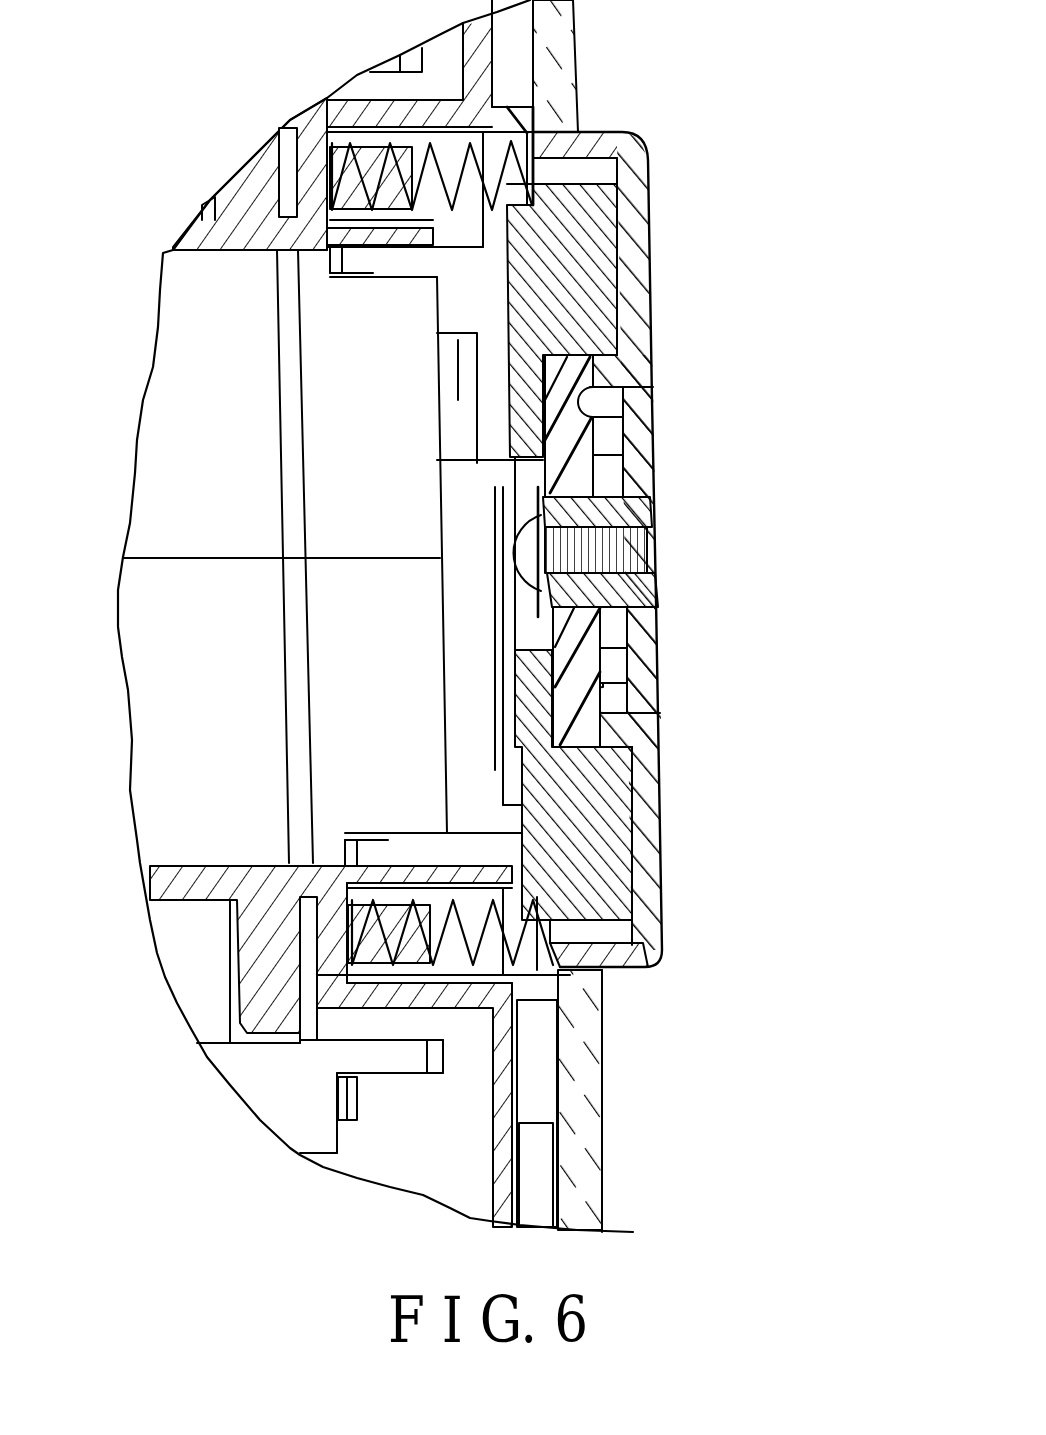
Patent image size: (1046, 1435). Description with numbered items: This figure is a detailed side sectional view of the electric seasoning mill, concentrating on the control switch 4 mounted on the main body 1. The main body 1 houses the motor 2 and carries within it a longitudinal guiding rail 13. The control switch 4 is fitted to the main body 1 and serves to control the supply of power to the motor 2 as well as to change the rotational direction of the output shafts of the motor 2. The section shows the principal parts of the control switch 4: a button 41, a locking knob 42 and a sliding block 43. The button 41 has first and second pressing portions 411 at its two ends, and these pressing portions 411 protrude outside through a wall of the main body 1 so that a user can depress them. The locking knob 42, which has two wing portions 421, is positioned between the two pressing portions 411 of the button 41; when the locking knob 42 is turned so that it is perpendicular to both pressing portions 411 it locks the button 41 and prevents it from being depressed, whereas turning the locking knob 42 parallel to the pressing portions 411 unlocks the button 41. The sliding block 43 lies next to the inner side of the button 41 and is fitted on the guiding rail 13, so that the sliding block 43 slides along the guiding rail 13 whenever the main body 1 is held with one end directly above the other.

The main body 1 is at (600, 1117).
The motor 2 is at (147, 627).
The control switch 4 is at (679, 537).
The guiding rail 13 is at (594, 692).
The button 41 is at (647, 671).
The locking knob 42 is at (659, 546).
The sliding block 43 is at (520, 474).
The pressing portions 411 is at (636, 299).
The wing portions 421 is at (637, 423).